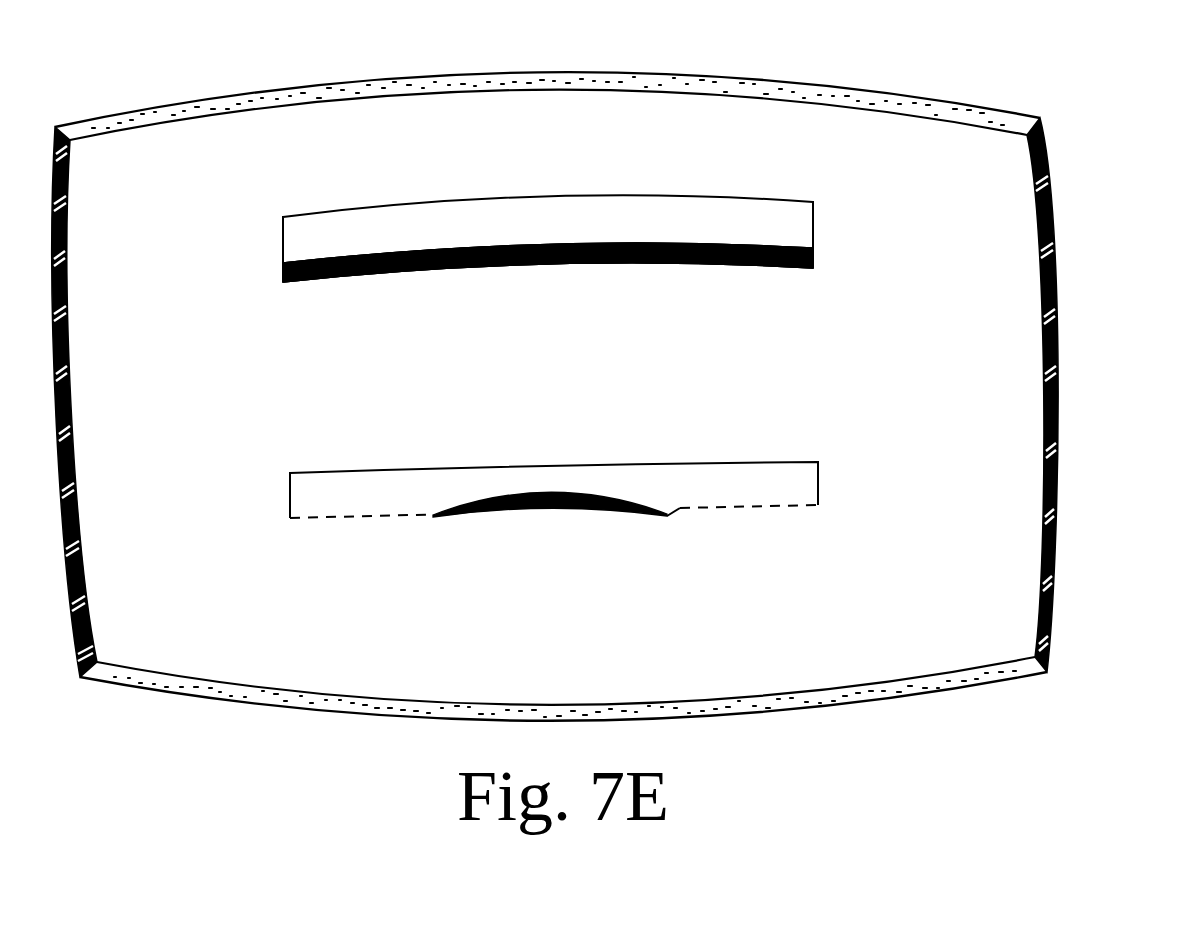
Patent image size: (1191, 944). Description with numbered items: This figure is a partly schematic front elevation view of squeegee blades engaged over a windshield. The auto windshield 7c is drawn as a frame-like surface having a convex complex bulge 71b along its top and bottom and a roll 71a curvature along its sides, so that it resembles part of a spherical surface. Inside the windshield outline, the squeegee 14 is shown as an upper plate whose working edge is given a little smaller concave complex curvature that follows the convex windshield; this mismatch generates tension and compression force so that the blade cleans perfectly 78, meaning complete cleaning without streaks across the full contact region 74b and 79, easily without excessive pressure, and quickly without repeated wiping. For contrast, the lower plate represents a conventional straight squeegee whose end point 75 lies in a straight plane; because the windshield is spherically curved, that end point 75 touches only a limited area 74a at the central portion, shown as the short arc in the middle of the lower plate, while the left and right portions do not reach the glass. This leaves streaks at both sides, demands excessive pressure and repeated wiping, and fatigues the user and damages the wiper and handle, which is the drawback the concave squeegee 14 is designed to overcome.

The auto windshield 7c is at (527, 133).
The roll curvature 71a is at (1050, 229).
The convex complex bulge 71b is at (893, 112).
The squeegee 14 is at (680, 218).
The perfect cleaning 78 is at (352, 277).
The complete cleaning contact 74b is at (548, 290).
The complete cleaning contact 79 is at (548, 290).
The end point of squeegee 75 is at (320, 520).
The limited contact area 74a is at (518, 512).